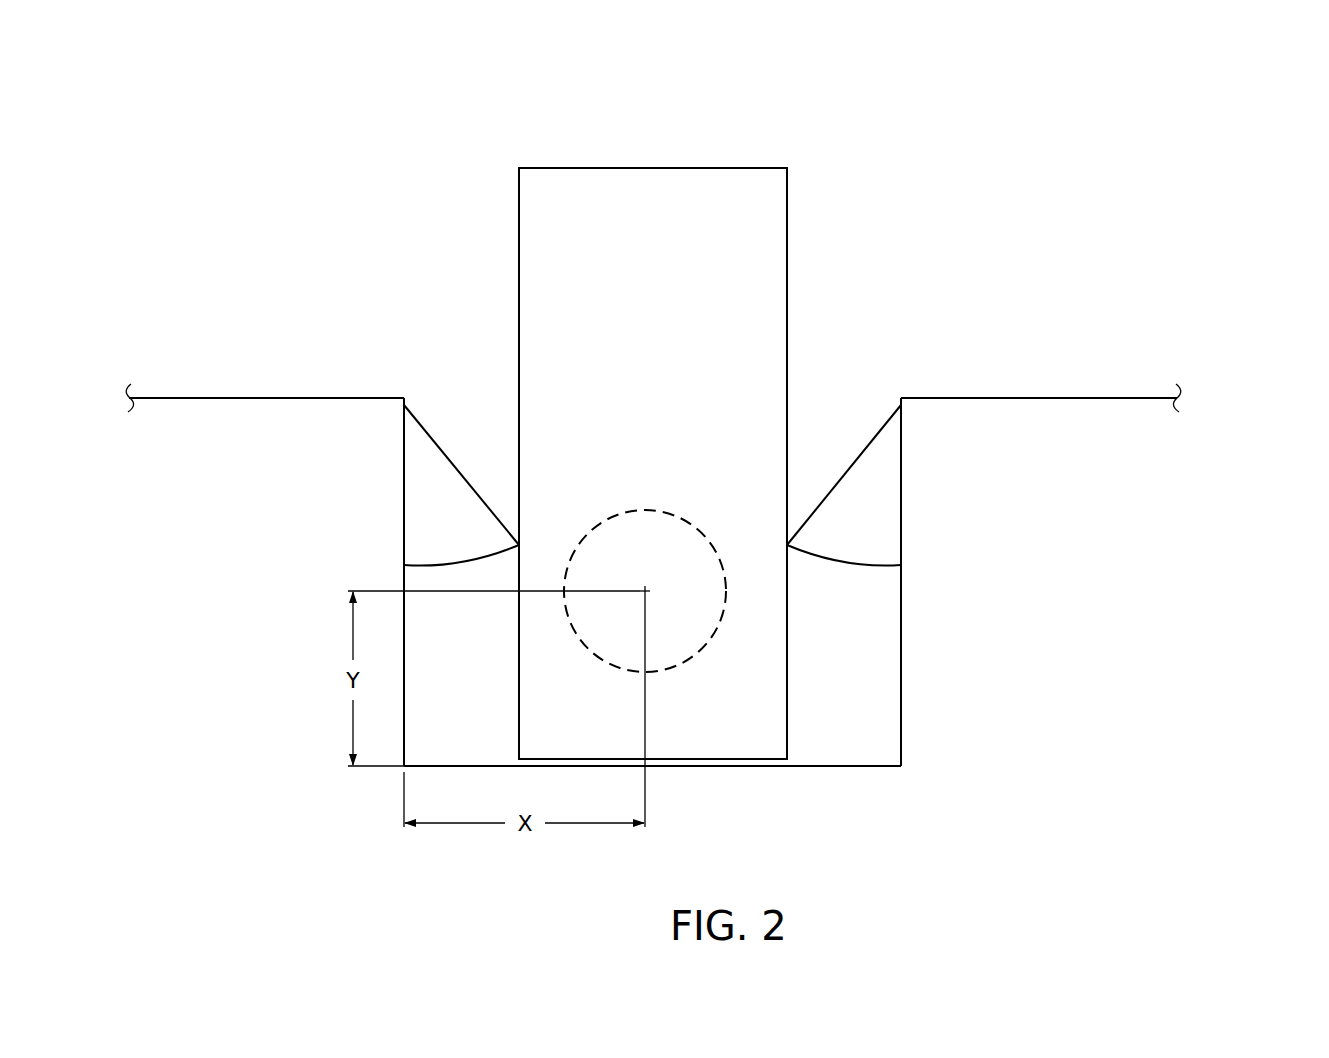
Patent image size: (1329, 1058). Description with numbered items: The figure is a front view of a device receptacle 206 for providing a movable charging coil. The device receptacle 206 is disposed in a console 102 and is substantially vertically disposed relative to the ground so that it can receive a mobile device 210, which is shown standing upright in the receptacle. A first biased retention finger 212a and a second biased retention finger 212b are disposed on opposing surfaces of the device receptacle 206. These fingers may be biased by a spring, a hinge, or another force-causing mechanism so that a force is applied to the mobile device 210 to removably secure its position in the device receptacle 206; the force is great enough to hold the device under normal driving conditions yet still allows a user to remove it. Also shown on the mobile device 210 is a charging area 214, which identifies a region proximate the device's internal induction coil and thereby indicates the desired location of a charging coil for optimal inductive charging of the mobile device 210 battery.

The console 102 is at (720, 509).
The device receptacle 206 is at (652, 827).
The mobile device 210 is at (653, 407).
The first biased retention finger 212a is at (461, 451).
The second biased retention finger 212b is at (844, 450).
The charging area 214 is at (652, 545).